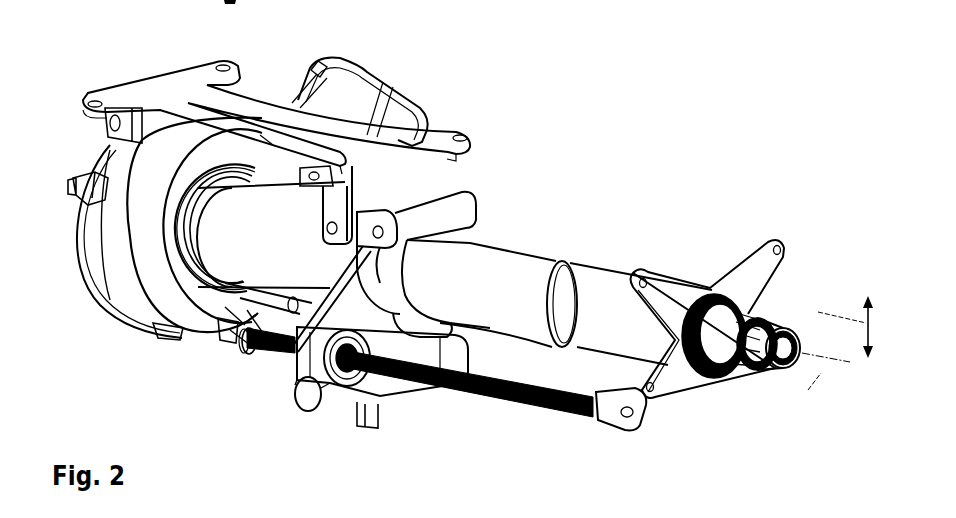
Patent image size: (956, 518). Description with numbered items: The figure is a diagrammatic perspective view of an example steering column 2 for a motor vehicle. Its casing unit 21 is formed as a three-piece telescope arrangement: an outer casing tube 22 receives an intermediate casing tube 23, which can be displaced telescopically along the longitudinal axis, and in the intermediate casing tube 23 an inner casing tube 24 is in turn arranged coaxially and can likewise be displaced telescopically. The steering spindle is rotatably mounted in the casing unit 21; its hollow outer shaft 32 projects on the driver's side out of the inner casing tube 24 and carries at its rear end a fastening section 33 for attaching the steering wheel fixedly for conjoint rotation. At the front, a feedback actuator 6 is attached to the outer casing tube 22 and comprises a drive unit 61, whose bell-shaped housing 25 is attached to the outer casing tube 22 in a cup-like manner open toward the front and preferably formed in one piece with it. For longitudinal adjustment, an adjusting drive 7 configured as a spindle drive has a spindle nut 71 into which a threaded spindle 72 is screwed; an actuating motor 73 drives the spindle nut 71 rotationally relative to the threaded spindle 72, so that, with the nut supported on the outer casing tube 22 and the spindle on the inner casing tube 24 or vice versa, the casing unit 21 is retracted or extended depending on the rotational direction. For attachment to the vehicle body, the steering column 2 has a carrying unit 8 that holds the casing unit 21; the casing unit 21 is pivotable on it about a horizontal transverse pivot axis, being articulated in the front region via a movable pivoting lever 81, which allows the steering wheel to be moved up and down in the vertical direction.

The steering column 2 is at (602, 70).
The feedback actuator 6 is at (397, 52).
The adjusting drive 7 is at (332, 426).
The carrying unit 8 is at (181, 88).
The casing unit 21 is at (534, 242).
The outer casing tube 22 is at (243, 253).
The intermediate casing tube 23 is at (538, 277).
The inner casing tube 24 is at (593, 304).
The housing 25 is at (108, 247).
The outer shaft 32 is at (743, 291).
The fastening section 33 is at (772, 307).
The drive unit 61 is at (87, 283).
The spindle nut 71 is at (312, 411).
The threaded spindle 72 is at (560, 418).
The actuating motor 73 is at (407, 393).
The pivoting lever 81 is at (379, 215).